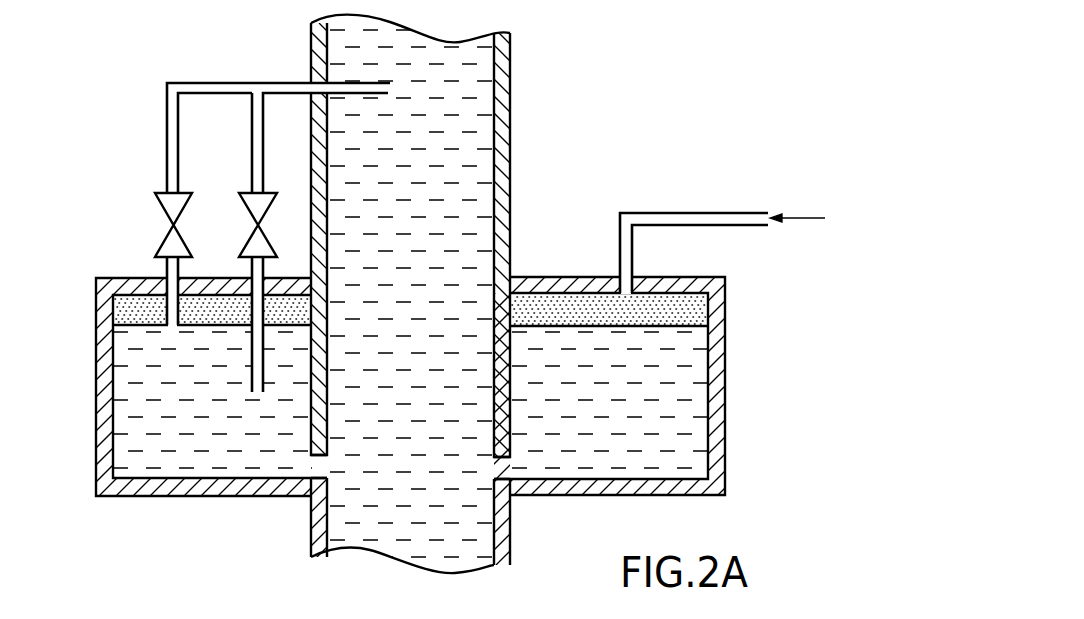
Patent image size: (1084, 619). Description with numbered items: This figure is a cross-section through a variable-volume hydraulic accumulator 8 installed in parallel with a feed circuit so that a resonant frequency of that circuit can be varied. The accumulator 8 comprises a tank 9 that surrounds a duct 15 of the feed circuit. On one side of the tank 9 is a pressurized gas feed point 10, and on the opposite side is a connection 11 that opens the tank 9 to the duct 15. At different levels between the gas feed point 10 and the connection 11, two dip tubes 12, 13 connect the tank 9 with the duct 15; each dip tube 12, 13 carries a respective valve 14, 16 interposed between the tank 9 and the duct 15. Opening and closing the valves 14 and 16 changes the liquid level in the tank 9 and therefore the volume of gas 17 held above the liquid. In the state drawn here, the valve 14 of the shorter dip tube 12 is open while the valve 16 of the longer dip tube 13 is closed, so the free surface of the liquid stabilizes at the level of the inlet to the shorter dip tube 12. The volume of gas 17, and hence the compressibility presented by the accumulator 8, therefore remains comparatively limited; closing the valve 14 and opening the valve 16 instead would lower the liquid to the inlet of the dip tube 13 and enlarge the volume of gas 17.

The hydraulic accumulator 8 is at (750, 363).
The tank 9 is at (105, 433).
The pressurized gas feed point 10 is at (623, 292).
The connection 11 is at (320, 470).
The dip tube 12 is at (165, 308).
The dip tube 13 is at (247, 310).
The valve 14 is at (165, 197).
The duct 15 is at (505, 102).
The valve 16 is at (247, 195).
The volume of gas 17 is at (557, 303).